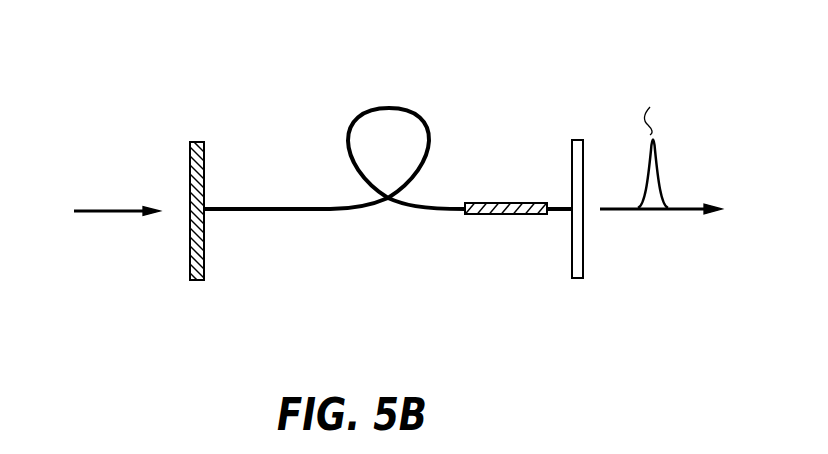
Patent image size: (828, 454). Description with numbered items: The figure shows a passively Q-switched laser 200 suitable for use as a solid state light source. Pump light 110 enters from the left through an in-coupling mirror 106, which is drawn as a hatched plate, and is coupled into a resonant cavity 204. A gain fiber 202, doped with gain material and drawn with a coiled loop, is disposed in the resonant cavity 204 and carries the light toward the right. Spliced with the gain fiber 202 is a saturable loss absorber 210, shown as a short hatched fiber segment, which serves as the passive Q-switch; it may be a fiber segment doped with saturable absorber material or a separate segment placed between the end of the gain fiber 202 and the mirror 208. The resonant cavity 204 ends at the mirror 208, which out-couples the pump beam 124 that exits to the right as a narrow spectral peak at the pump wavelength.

The passively Q-switched laser 200 is at (149, 38).
The input mirror 106 is at (189, 146).
The pump light 110 is at (100, 211).
The gain fiber 202 is at (360, 115).
The resonant cavity 204 is at (486, 70).
The saturable loss absorber 210 is at (508, 203).
The mirror 208 is at (572, 252).
The pump beam 124 is at (630, 210).